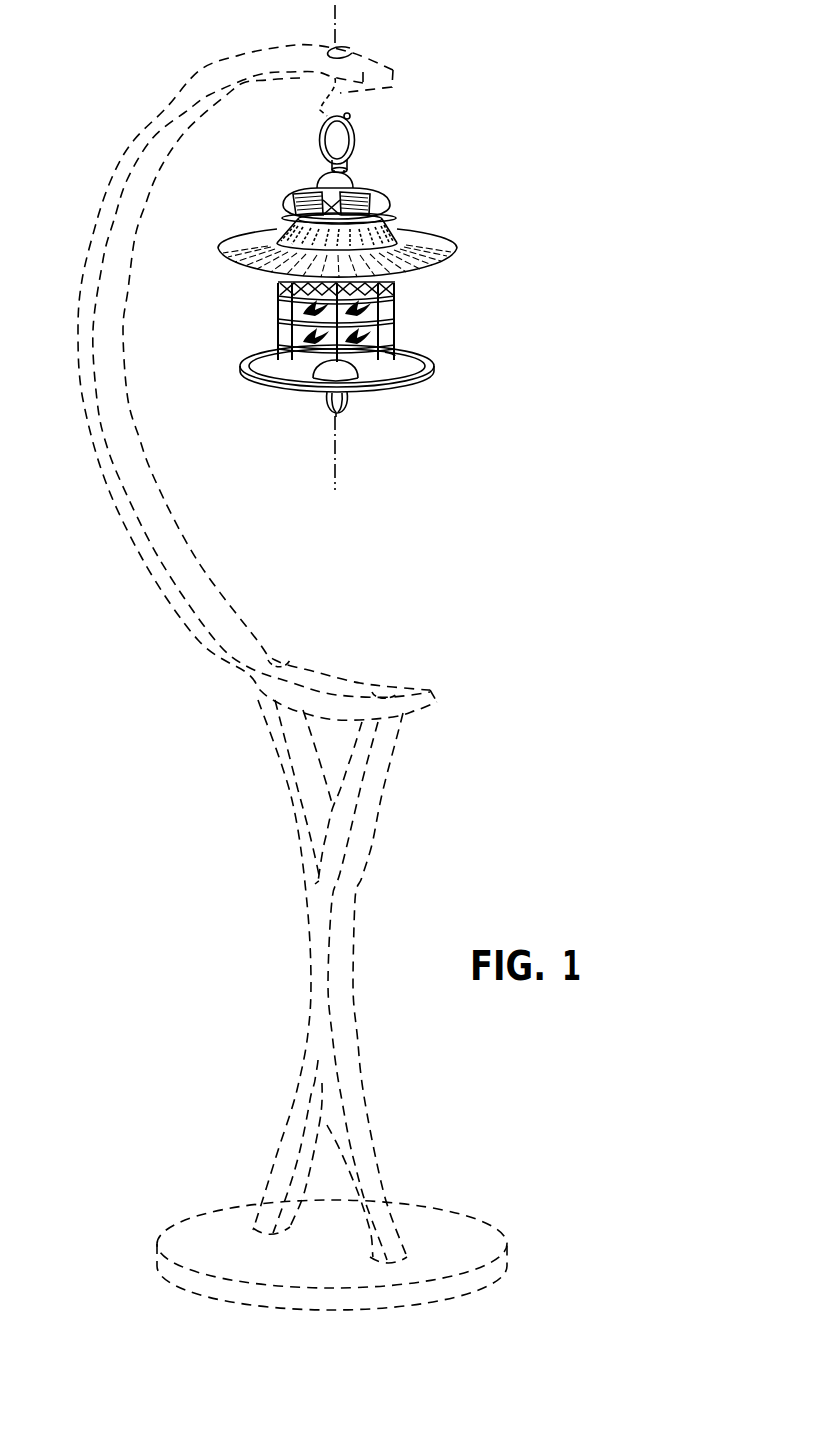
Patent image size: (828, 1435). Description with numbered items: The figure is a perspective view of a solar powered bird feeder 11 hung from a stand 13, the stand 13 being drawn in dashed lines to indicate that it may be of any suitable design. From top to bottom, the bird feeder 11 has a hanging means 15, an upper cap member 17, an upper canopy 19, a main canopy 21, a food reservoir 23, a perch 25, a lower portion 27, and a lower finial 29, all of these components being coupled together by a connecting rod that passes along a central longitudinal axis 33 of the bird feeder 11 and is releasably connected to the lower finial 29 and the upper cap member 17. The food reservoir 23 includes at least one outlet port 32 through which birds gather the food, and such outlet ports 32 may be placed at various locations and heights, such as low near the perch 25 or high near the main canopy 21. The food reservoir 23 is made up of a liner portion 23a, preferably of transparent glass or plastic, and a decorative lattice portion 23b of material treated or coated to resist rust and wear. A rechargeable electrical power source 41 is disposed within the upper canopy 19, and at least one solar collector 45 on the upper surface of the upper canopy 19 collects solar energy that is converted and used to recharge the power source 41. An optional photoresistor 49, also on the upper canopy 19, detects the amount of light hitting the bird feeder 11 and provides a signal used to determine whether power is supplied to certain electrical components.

The solar powered bird feeder 11 is at (571, 103).
The stand 13 is at (318, 676).
The hanging means 15 is at (360, 133).
The upper cap member 17 is at (350, 165).
The upper canopy 19 is at (278, 196).
The main canopy 21 is at (438, 262).
The food reservoir 23 is at (415, 302).
The liner portion 23a is at (394, 330).
The decorative lattice portion 23b is at (287, 305).
The perch 25 is at (430, 378).
The lower portion 27 is at (354, 397).
The lower finial 29 is at (344, 413).
The outlet port 32 is at (410, 353).
The central longitudinal axis 33 is at (345, 478).
The rechargeable electrical power source 41 is at (393, 196).
The solar collector 45 is at (363, 204).
The photoresistor 49 is at (188, 176).